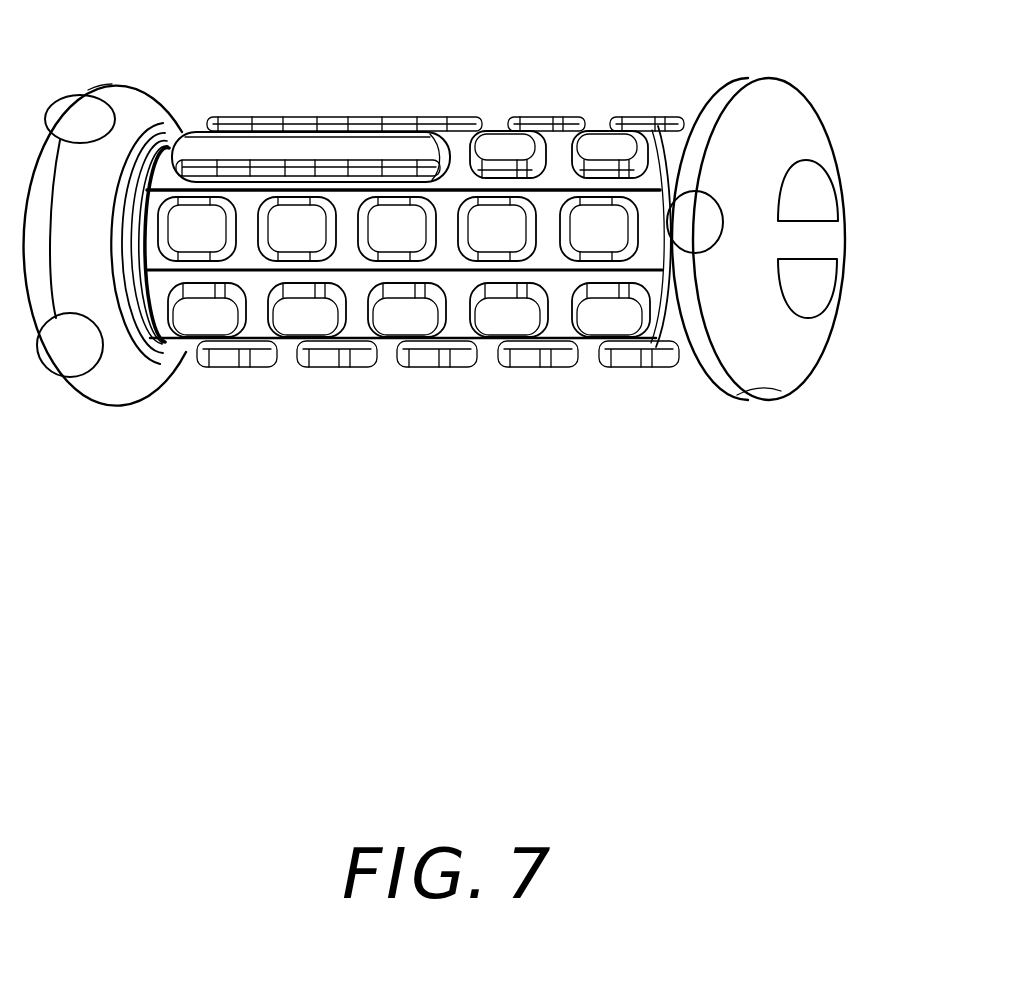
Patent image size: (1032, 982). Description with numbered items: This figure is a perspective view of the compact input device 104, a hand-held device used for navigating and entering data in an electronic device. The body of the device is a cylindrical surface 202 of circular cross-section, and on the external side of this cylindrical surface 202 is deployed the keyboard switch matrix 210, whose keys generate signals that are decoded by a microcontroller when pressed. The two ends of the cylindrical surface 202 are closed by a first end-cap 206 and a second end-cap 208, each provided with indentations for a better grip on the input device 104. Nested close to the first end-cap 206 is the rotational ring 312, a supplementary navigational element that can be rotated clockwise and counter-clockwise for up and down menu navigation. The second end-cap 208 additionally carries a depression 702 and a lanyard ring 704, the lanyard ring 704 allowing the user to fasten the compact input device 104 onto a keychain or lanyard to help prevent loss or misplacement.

The compact input device 104 is at (221, 600).
The cylindrical surface 202 is at (560, 318).
The first end-cap 206 is at (118, 86).
The second end-cap 208 is at (832, 333).
The keyboard switch matrix 210 is at (497, 138).
The rotational ring 312 is at (168, 357).
The depression 702 is at (822, 203).
The lanyard ring 704 is at (825, 240).